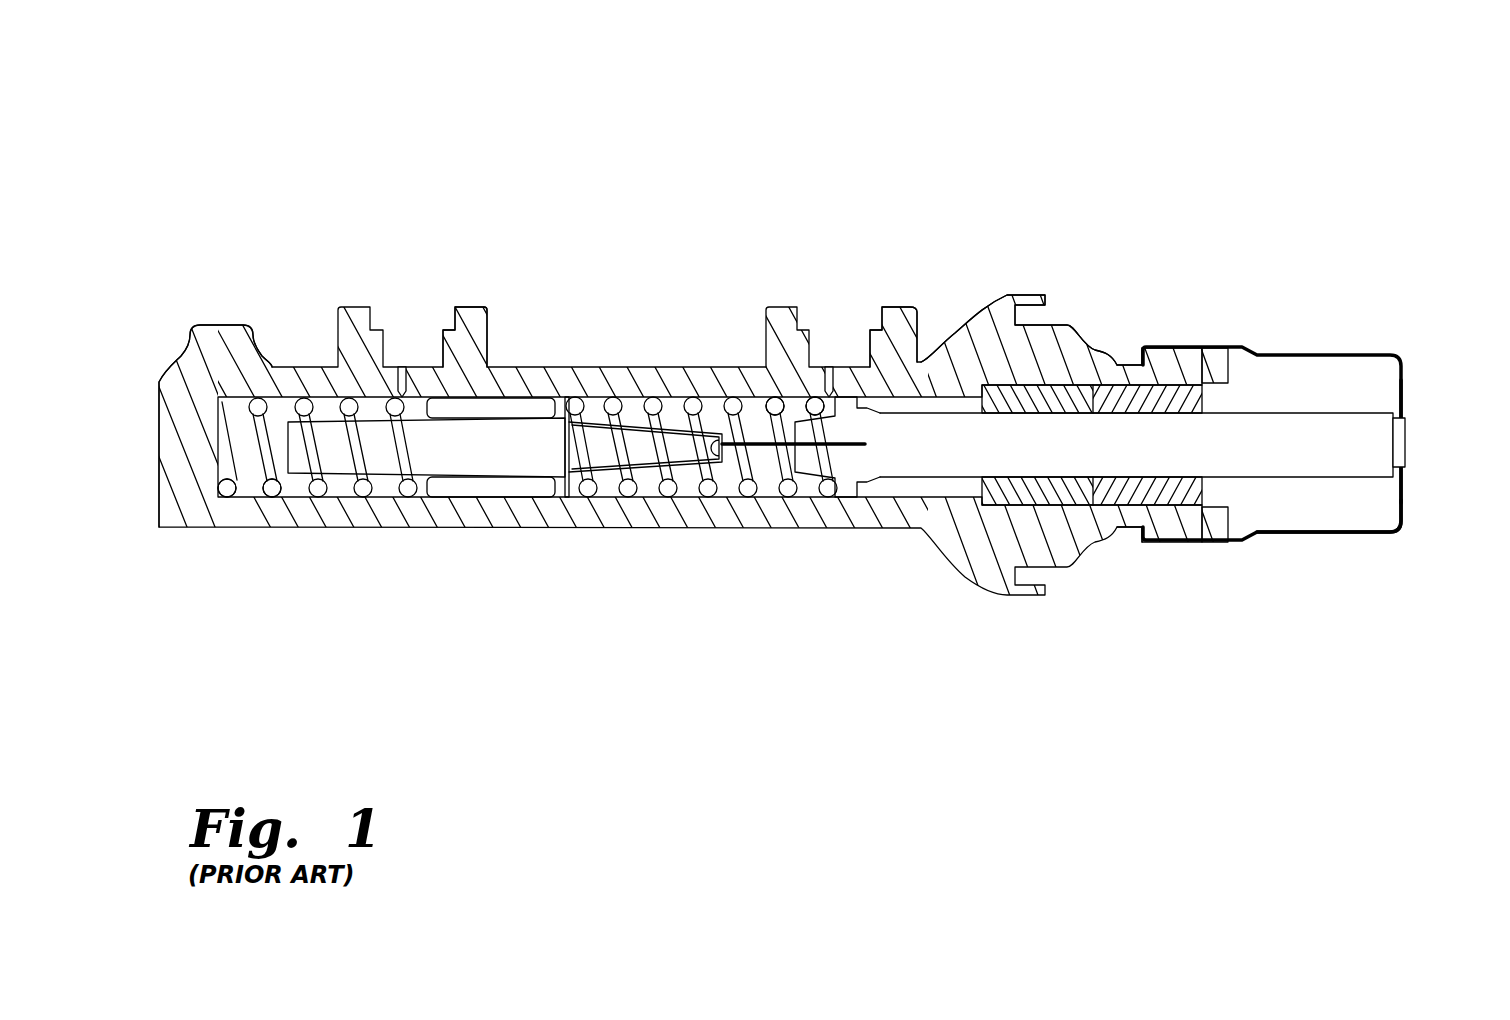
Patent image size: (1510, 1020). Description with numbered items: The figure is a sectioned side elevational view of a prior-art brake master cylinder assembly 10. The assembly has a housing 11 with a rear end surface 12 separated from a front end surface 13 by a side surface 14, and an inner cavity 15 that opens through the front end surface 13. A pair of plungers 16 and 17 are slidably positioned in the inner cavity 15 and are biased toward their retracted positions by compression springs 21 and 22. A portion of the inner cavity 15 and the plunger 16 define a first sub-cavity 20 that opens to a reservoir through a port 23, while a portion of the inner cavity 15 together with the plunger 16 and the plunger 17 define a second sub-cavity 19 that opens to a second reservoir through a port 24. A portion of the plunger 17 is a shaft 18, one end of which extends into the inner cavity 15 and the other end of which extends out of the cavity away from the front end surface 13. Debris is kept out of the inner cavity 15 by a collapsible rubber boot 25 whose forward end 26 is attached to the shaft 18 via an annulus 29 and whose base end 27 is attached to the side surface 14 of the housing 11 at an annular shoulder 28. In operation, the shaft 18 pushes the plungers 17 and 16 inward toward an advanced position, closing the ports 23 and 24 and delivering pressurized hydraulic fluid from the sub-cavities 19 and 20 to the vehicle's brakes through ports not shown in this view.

The brake master cylinder assembly 10 is at (420, 175).
The housing 11 is at (433, 528).
The rear end surface 12 is at (157, 372).
The front end surface 13 is at (1230, 522).
The side surface 14 is at (747, 525).
The inner cavity 15 is at (942, 487).
The plunger 16 is at (497, 477).
The plunger 17 is at (920, 360).
The shaft 18 is at (1310, 413).
The second sub-cavity 19 is at (760, 410).
The first sub-cavity 20 is at (238, 433).
The compression spring 21 is at (262, 478).
The compression spring 22 is at (722, 420).
The port 23 is at (437, 342).
The port 24 is at (870, 340).
The collapsible rubber boot 25 is at (1320, 532).
The forward end 26 is at (1407, 455).
The base end 27 is at (1178, 345).
The annular shoulder 28 is at (1147, 533).
The annulus 29 is at (1406, 418).